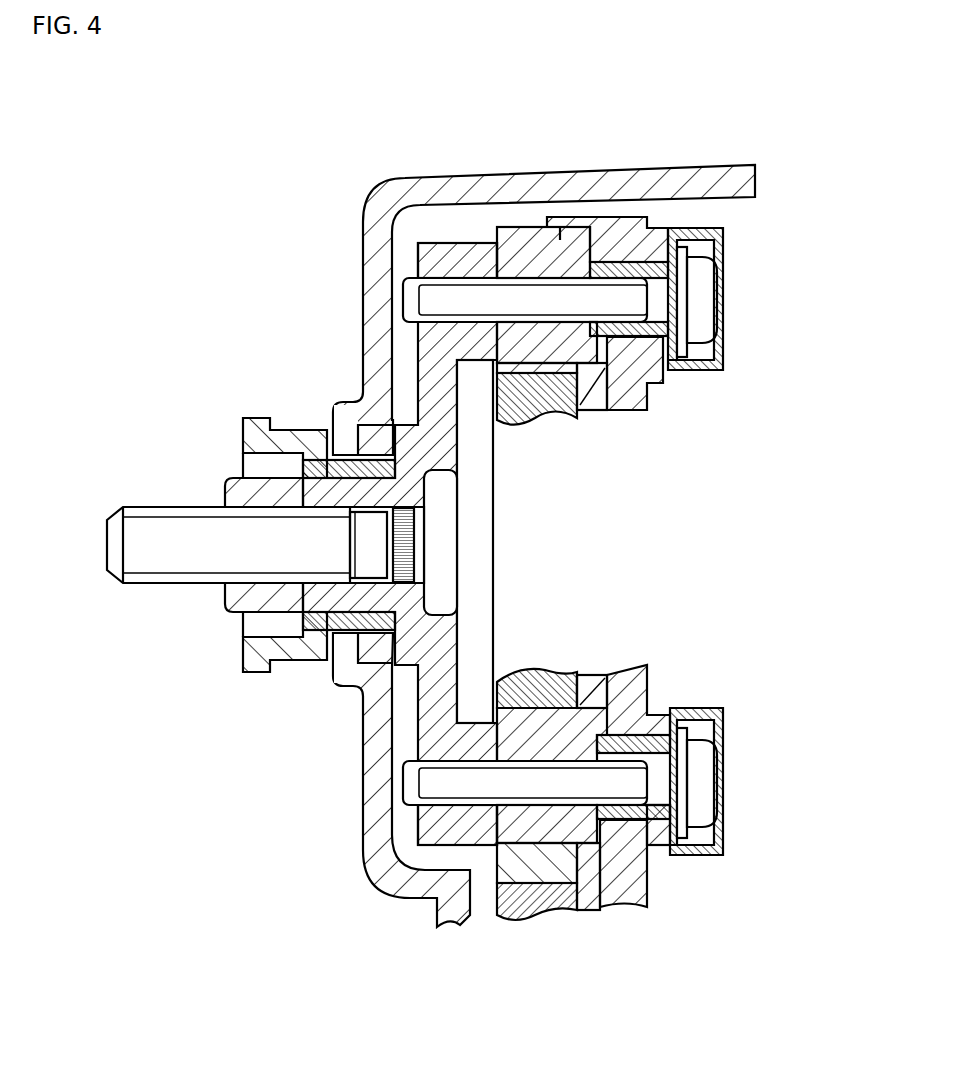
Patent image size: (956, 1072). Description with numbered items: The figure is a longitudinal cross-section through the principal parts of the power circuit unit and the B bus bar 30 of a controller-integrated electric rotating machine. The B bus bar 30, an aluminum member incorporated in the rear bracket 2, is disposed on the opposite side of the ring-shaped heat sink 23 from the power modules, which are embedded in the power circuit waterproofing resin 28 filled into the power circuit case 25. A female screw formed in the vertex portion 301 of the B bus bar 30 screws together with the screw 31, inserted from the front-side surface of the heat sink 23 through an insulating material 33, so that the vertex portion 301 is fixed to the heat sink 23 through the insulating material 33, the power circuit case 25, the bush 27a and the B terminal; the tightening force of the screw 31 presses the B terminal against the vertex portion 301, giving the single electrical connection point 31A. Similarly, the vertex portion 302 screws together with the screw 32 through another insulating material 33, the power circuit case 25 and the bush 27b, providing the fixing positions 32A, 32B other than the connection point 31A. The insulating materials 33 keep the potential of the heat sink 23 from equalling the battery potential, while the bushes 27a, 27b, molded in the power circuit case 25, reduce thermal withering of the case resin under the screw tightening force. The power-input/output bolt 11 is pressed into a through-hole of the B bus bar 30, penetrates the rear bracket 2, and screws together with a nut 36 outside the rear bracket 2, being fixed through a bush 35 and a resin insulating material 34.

The rear bracket 2 is at (425, 188).
The power-input/output bolt 11 is at (175, 545).
The heat sink 23 is at (652, 405).
The power circuit case 25 is at (575, 217).
The bush 27a is at (595, 914).
The bush 27b is at (520, 230).
The power circuit waterproofing resin 28 is at (536, 400).
The B bus bar 30 is at (350, 564).
The vertex portion 301 is at (445, 845).
The vertex portion 302 is at (425, 262).
The screw 31 is at (695, 782).
The connection point 31A is at (425, 818).
The screw 32 is at (695, 292).
The position 32A is at (418, 266).
The position 32B is at (525, 300).
The insulating material 33 is at (720, 230).
The resin insulating material 34 is at (245, 430).
The bush 35 is at (258, 665).
The nut 36 is at (225, 600).